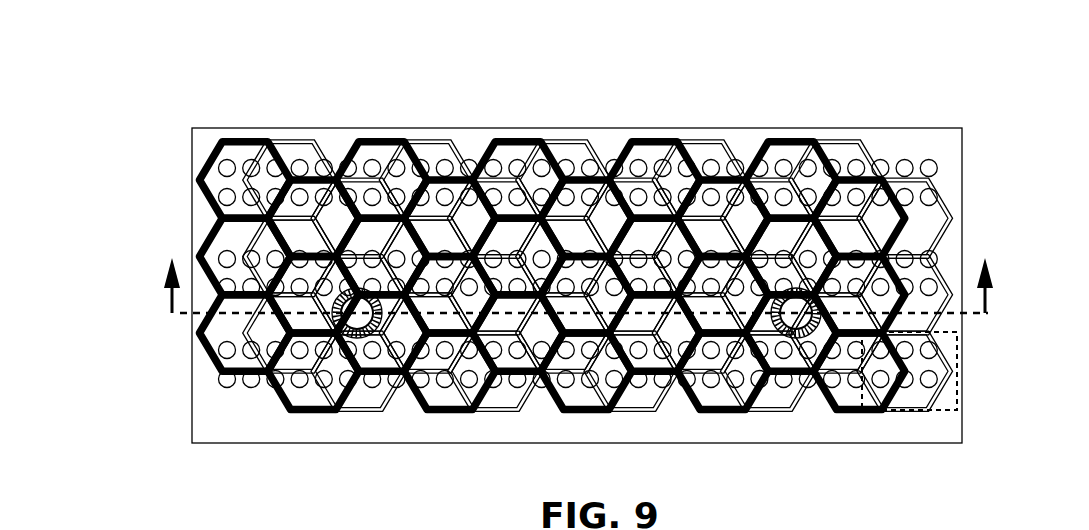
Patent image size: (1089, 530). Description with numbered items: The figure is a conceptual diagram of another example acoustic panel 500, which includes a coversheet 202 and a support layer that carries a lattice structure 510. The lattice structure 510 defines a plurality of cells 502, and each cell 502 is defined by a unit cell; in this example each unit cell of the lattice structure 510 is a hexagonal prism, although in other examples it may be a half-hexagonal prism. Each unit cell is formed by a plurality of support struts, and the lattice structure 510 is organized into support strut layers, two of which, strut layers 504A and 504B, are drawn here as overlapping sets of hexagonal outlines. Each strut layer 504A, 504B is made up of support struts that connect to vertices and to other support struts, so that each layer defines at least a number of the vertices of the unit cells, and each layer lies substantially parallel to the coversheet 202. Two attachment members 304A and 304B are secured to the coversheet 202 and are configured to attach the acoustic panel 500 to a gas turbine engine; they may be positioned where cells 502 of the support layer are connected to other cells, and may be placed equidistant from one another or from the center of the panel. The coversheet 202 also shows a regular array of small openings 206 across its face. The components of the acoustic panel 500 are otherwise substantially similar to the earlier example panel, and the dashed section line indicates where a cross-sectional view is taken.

The acoustic panel 500 is at (86, 58).
The coversheet 202 is at (858, 128).
The apertures 206 is at (940, 200).
The lattice structure 510 is at (576, 237).
The support strut layer 504A is at (585, 140).
The support strut layer 504B is at (262, 140).
The attachment member 304A is at (355, 338).
The attachment member 304B is at (796, 338).
The cell 502 is at (968, 385).